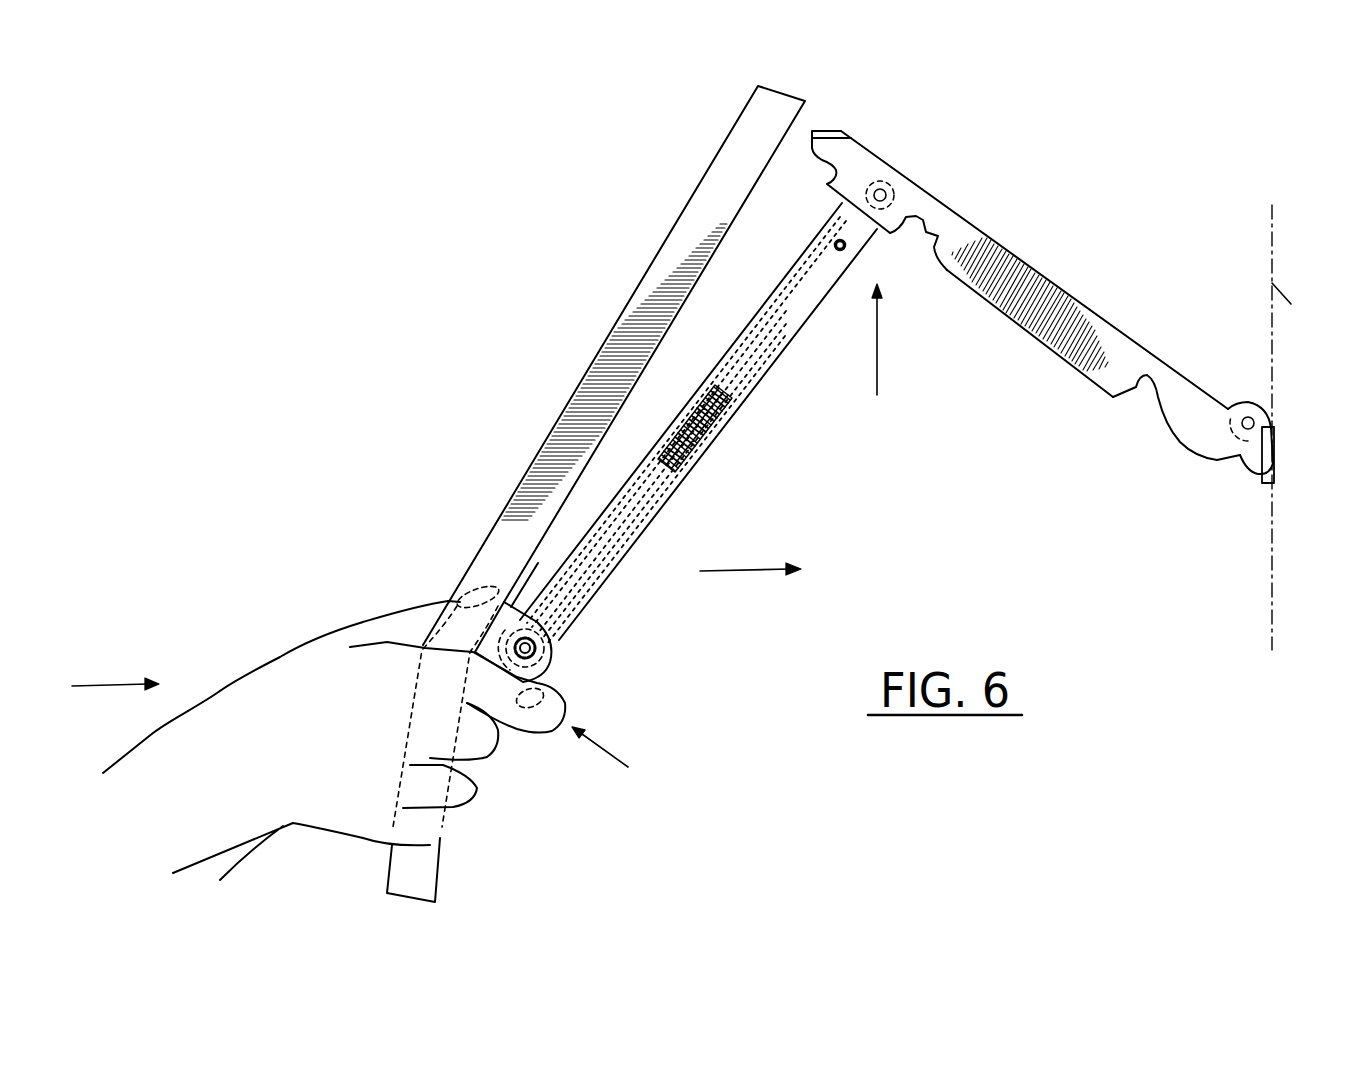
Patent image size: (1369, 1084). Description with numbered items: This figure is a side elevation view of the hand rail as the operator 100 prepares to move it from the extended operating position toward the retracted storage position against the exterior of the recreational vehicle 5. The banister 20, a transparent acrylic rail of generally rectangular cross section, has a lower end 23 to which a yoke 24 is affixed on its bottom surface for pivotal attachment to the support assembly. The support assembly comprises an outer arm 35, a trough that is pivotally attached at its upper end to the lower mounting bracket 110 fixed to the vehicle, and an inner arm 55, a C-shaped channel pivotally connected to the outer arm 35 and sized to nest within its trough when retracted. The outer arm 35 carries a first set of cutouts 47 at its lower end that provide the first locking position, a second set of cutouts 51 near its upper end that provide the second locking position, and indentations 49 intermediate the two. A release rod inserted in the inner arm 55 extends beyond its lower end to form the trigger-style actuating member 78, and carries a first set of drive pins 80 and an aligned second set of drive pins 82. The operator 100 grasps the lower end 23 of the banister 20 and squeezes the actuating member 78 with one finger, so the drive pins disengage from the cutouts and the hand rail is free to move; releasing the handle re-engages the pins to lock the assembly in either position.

The recreational vehicle 5 is at (1270, 282).
The banister 20 is at (672, 226).
The lower end 23 is at (386, 872).
The yoke 24 is at (538, 563).
The outer arm 35 is at (996, 240).
The first set of cutouts 47 is at (828, 183).
The indentations 49 is at (925, 232).
The second set of cutouts 51 is at (1153, 398).
The inner arm 55 is at (769, 365).
The actuating member 78 is at (533, 742).
The first set of drive pins 80 is at (848, 250).
The second set of drive pins 82 is at (680, 470).
The operator 100 is at (168, 755).
The lower mounting bracket 110 is at (1273, 457).